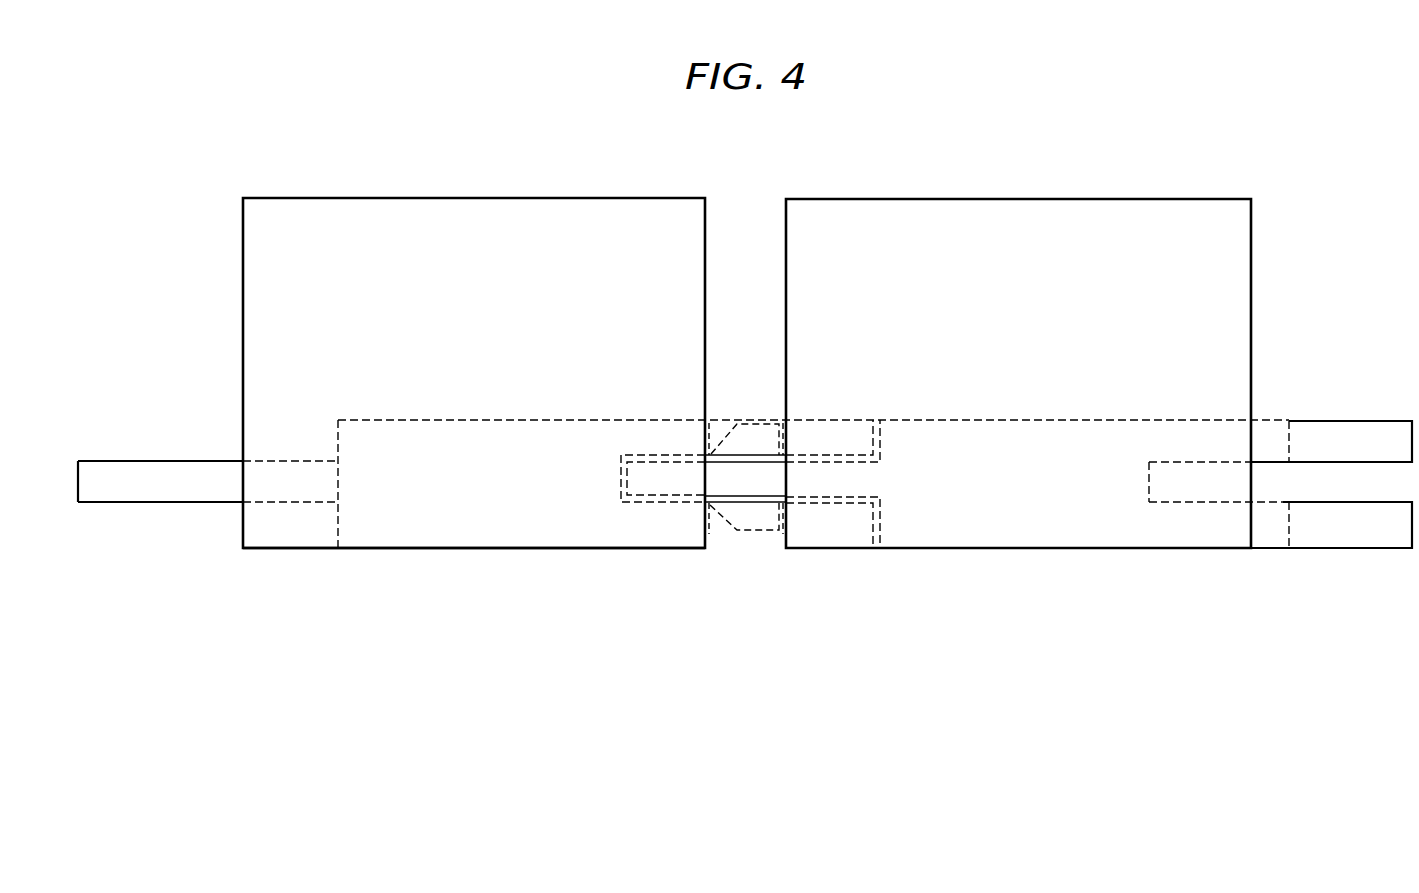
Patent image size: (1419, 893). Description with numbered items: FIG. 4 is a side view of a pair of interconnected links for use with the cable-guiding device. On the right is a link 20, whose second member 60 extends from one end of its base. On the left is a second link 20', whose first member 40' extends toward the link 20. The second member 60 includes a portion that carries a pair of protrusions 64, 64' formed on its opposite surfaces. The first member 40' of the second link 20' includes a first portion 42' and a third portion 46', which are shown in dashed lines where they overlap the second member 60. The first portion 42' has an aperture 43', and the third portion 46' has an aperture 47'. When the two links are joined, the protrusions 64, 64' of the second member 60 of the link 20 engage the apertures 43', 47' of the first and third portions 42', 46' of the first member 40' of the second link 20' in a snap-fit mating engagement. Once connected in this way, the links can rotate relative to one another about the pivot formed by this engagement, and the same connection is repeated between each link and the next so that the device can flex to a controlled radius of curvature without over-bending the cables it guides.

The second link 20' is at (391, 336).
The link 20 is at (1099, 340).
The first portion 42' is at (766, 469).
The aperture 43' is at (719, 422).
The protrusion 64 is at (745, 415).
The first member 40' is at (671, 478).
The second member 60 is at (862, 485).
The third portion 46' is at (474, 568).
The aperture 47' is at (745, 549).
The protrusion 64' is at (748, 545).